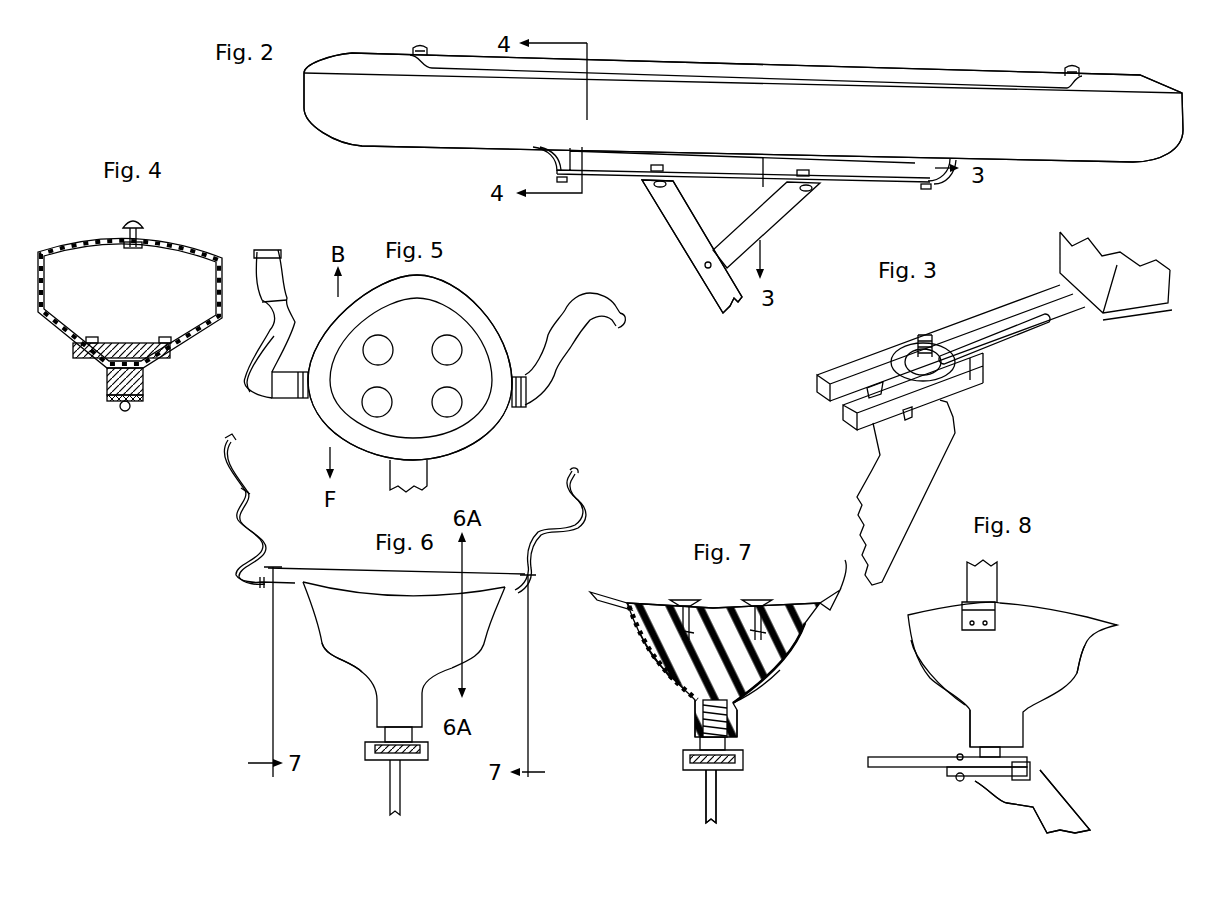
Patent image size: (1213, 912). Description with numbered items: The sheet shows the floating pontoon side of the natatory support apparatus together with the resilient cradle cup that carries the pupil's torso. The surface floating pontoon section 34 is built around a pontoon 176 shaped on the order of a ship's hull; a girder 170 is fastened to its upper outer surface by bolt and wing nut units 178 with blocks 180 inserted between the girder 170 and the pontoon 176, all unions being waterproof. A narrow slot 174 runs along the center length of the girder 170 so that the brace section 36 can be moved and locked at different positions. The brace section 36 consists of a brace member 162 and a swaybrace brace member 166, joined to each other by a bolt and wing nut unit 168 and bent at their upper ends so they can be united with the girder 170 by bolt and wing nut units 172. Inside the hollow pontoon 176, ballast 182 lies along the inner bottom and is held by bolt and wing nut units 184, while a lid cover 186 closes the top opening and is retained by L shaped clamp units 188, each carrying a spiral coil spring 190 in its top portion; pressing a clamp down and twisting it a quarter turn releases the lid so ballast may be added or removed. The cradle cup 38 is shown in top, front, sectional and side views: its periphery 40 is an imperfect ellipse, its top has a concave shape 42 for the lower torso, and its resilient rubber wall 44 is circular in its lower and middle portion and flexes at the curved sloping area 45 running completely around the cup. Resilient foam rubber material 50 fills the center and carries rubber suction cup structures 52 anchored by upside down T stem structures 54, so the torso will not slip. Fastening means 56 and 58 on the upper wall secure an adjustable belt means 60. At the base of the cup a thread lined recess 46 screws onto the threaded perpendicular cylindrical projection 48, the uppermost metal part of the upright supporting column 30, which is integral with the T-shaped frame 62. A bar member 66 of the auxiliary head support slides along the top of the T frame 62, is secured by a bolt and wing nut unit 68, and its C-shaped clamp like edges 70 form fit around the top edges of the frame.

In FIG. 7, the upright supporting column 30 is at (704, 818).
In FIG. 8, the upright supporting column 30 is at (1092, 820).
In FIG. 2, the surface floating pontoon section 34 is at (722, 59).
In FIG. 2, the brace section 36 is at (720, 302).
In FIG. 5, the resilient cradle cup 38 is at (473, 288).
In FIG. 6, the resilient cradle cup 38 is at (474, 667).
In FIG. 8, the resilient cradle cup 38 is at (1063, 690).
In FIG. 5, the periphery 40 is at (493, 328).
In FIG. 7, the periphery 40 is at (723, 670).
In FIG. 8, the periphery 40 is at (1087, 617).
In FIG. 6, the concave shape 42 is at (388, 600).
In FIG. 7, the concave shape 42 is at (655, 601).
In FIG. 6, the resilient rubber wall 44 is at (320, 633).
In FIG. 7, the resilient rubber wall 44 is at (637, 648).
In FIG. 8, the resilient rubber wall 44 is at (1080, 657).
In FIG. 6, the sloping area 45 is at (345, 666).
In FIG. 7, the sloping area 45 is at (776, 676).
In FIG. 8, the sloping area 45 is at (931, 681).
In FIG. 7, the thread lined recess 46 is at (695, 719).
In FIG. 7, the threaded perpendicular cylindrical projection 48 is at (738, 719).
In FIG. 8, the threaded perpendicular cylindrical projection 48 is at (1005, 752).
In FIG. 5, the resilient foam rubber material 50 is at (355, 341).
In FIG. 7, the resilient foam rubber material 50 is at (665, 656).
In FIG. 5, the rubber suction cup structure 52 is at (450, 406).
In FIG. 7, the rubber suction cup structure 52 is at (758, 600).
In FIG. 7, the upside down T stem structure 54 is at (790, 661).
In FIG. 5, the fastening means 56 is at (522, 408).
In FIG. 7, the fastening means 56 is at (825, 612).
In FIG. 5, the fastening means 58 is at (300, 400).
In FIG. 7, the fastening means 58 is at (620, 606).
In FIG. 5, the adjustable belt means 60 is at (256, 366).
In FIG. 6, the adjustable belt means 60 is at (405, 513).
In FIG. 6, the T-shaped frame 62 is at (385, 762).
In FIG. 7, the T-shaped frame 62 is at (703, 771).
In FIG. 8, the T-shaped frame 62 is at (950, 771).
In FIG. 5, the bar member 66 is at (412, 481).
In FIG. 7, the bar member 66 is at (730, 752).
In FIG. 8, the bar member 66 is at (908, 756).
In FIG. 8, the bolt and wing nut unit 68 is at (958, 783).
In FIG. 7, the clamp like edges 70 is at (683, 759).
In FIG. 8, the clamp like edges 70 is at (1032, 769).
In FIG. 2, the brace member 162 is at (670, 223).
In FIG. 2, the brace member 166 is at (770, 222).
In FIG. 3, the brace member 166 is at (935, 452).
In FIG. 2, the bolt and wing nut unit 168 is at (705, 267).
In FIG. 2, the girder 170 is at (718, 178).
In FIG. 4, the girder 170 is at (143, 398).
In FIG. 3, the girder 170 is at (990, 311).
In FIG. 2, the bolt and wing nut unit 172 is at (660, 165).
In FIG. 3, the bolt and wing nut unit 172 is at (917, 338).
In FIG. 3, the narrow slot 174 is at (1012, 333).
In FIG. 2, the pontoon 176 is at (382, 135).
In FIG. 4, the pontoon 176 is at (204, 251).
In FIG. 2, the bolt and wing nut unit 178 is at (556, 179).
In FIG. 4, the bolt and wing nut unit 178 is at (128, 412).
In FIG. 2, the block 180 is at (545, 149).
In FIG. 4, the block 180 is at (143, 381).
In FIG. 3, the block 180 is at (1068, 260).
In FIG. 4, the ballast 182 is at (122, 343).
In FIG. 4, the bolt and wing nut unit 184 is at (92, 336).
In FIG. 2, the lid cover 186 is at (831, 75).
In FIG. 4, the lid cover 186 is at (165, 241).
In FIG. 2, the L shaped clamp unit 188 is at (415, 49).
In FIG. 4, the L shaped clamp unit 188 is at (133, 220).
In FIG. 4, the spiral coil spring 190 is at (125, 236).